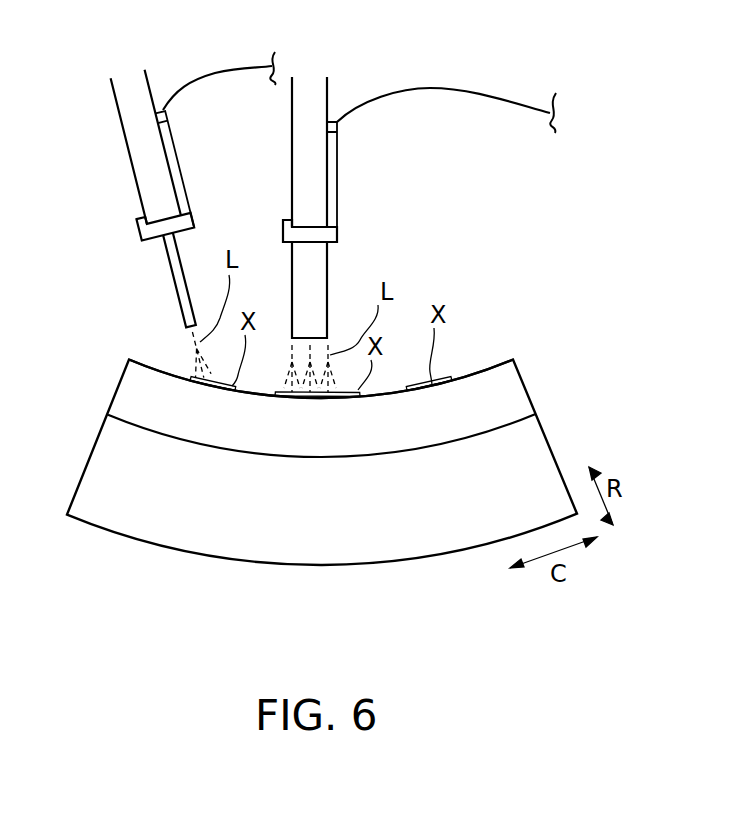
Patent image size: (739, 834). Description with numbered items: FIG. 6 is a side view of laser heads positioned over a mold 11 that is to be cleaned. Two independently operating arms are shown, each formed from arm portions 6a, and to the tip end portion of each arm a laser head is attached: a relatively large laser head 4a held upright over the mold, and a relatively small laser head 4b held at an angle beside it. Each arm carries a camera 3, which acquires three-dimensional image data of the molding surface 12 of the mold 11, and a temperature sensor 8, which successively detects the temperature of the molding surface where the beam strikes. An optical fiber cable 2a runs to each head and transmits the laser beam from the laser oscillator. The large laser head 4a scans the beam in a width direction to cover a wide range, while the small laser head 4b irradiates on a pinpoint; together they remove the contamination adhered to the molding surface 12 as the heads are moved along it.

The optical fiber cable 2a is at (207, 83).
The camera 3 is at (140, 232).
The relatively large laser head 4a is at (320, 280).
The relatively small laser head 4b is at (180, 281).
The arm portion 6a is at (140, 162).
The temperature sensor 8 is at (183, 224).
The mold 11 is at (95, 447).
The molding surface 12 is at (497, 367).